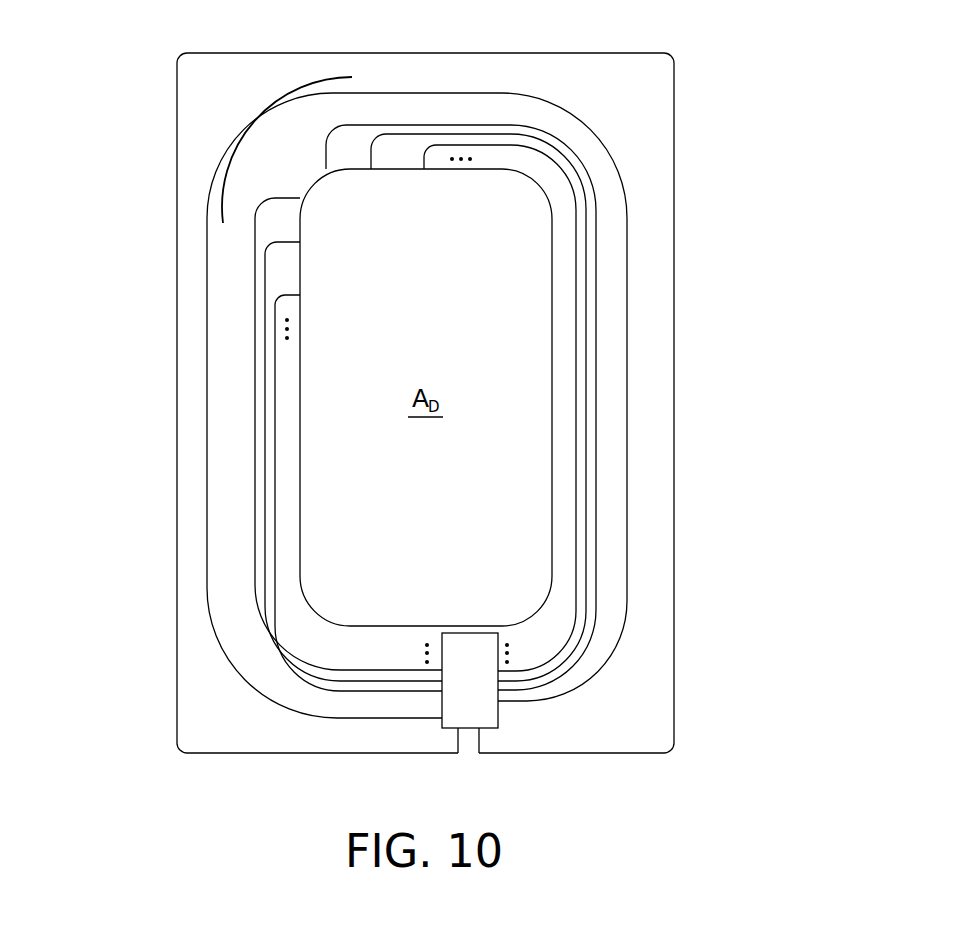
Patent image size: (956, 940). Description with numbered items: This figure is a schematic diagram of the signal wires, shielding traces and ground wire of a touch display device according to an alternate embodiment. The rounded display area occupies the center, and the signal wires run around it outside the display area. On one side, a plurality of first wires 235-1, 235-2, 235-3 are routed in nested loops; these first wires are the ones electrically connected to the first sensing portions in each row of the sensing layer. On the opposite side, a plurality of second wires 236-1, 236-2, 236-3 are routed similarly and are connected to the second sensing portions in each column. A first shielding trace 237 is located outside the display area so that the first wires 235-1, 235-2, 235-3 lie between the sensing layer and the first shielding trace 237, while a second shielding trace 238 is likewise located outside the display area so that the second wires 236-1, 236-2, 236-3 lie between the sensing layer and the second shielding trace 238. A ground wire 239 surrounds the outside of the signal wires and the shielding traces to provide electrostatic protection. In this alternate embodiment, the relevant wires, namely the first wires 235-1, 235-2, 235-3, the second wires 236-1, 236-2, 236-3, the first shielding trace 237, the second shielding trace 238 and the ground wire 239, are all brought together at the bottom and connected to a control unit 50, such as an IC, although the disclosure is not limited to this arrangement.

The control unit 50 is at (490, 715).
The first wire 235-1 is at (277, 350).
The first wire 235-2 is at (263, 378).
The first wire 235-3 is at (253, 413).
The second wire 236-1 is at (577, 314).
The second wire 236-2 is at (587, 358).
The second wire 236-3 is at (597, 397).
The first shielding trace 237 is at (252, 118).
The second shielding trace 238 is at (412, 93).
The ground wire 239 is at (674, 475).